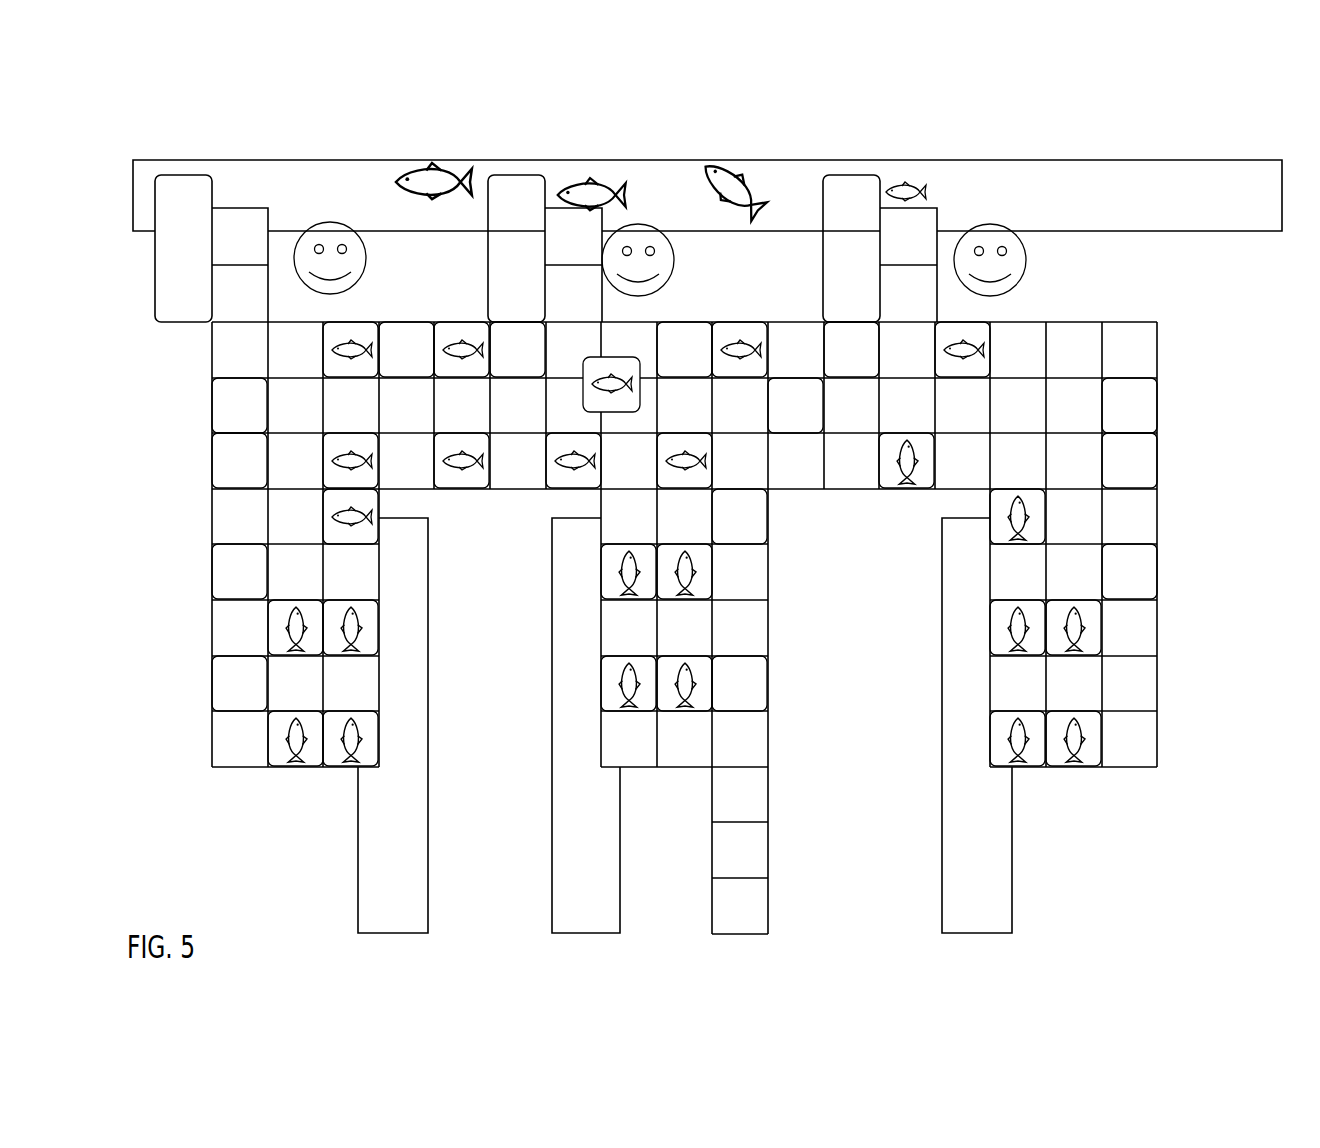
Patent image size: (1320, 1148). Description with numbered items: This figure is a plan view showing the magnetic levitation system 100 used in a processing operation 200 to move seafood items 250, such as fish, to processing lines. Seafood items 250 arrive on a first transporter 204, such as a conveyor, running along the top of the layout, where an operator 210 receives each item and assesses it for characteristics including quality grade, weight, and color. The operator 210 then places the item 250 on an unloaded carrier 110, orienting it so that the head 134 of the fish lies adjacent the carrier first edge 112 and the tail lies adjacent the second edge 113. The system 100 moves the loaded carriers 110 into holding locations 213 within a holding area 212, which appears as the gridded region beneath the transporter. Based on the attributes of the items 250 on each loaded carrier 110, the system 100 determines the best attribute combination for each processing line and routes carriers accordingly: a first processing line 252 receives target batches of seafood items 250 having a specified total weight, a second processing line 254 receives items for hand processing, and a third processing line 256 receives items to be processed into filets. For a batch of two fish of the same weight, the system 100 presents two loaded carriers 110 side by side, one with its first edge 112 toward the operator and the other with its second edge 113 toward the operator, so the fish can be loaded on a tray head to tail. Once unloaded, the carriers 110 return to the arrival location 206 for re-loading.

The magnetic levitation system 100 is at (1113, 105).
The carrier 110 is at (963, 363).
The first edge 112 is at (705, 167).
The second edge 113 is at (758, 208).
The head 134 is at (728, 185).
The processing operation 200 is at (1195, 388).
The first transporter 204 is at (1183, 140).
The arrival location 206 is at (908, 105).
The operator 210 is at (1017, 262).
The holding area 212 is at (188, 378).
The holding location 213 is at (530, 513).
The seafood item 250 is at (897, 187).
The first processing line 252 is at (317, 875).
The second processing line 254 is at (523, 875).
The third processing line 256 is at (1037, 920).